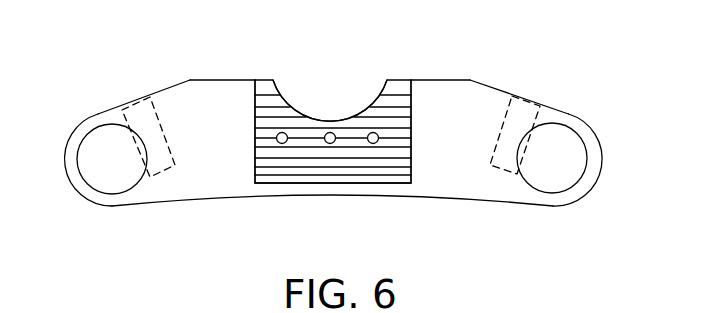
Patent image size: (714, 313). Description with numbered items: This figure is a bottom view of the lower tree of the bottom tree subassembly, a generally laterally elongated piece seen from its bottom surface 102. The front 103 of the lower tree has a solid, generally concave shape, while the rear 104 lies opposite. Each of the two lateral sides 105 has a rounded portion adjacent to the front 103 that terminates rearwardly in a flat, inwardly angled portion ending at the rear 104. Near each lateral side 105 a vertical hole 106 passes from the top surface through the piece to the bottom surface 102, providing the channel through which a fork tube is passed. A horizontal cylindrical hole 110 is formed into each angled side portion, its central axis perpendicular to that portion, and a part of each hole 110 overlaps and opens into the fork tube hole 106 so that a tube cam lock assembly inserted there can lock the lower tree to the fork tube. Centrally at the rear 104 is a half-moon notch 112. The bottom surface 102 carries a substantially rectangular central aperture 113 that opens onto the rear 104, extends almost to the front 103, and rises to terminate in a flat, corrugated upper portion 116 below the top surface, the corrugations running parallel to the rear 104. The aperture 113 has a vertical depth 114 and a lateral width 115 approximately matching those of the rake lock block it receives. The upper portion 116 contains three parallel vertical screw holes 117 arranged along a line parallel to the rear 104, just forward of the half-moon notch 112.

The bottom surface 102 is at (470, 93).
The front 103 is at (345, 197).
The rear 104 is at (443, 78).
The lateral sides 105 is at (68, 182).
The vertical hole 106 is at (103, 140).
The horizontal cylindrical hole 110 is at (143, 114).
The half-moon notch 112 is at (322, 107).
The central aperture 113 is at (403, 148).
The vertical depth 114 is at (410, 112).
The lateral width 115 is at (293, 185).
The upper portion 116 is at (265, 123).
The vertical screw holes 117 is at (370, 144).